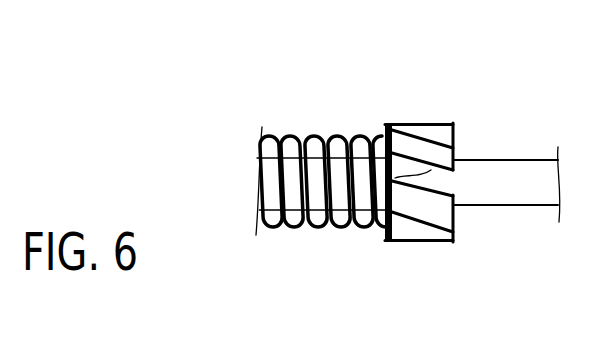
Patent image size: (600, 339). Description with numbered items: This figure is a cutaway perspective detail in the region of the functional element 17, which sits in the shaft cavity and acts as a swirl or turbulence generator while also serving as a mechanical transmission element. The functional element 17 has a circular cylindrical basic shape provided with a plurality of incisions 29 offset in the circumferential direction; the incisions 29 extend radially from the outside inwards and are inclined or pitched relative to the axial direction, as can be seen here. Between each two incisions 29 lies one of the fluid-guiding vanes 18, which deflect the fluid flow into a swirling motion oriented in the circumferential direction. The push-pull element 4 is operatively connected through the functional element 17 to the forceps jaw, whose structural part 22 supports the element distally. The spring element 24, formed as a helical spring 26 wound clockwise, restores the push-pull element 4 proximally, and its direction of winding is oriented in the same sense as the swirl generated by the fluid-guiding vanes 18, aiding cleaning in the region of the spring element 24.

The push-pull element 4 is at (547, 178).
The functional element 17 is at (432, 82).
The fluid-guiding vanes 18 is at (440, 213).
The structural part 22 is at (260, 190).
The spring element 24 is at (322, 118).
The helical spring 26 is at (313, 78).
The incisions 29 is at (431, 175).